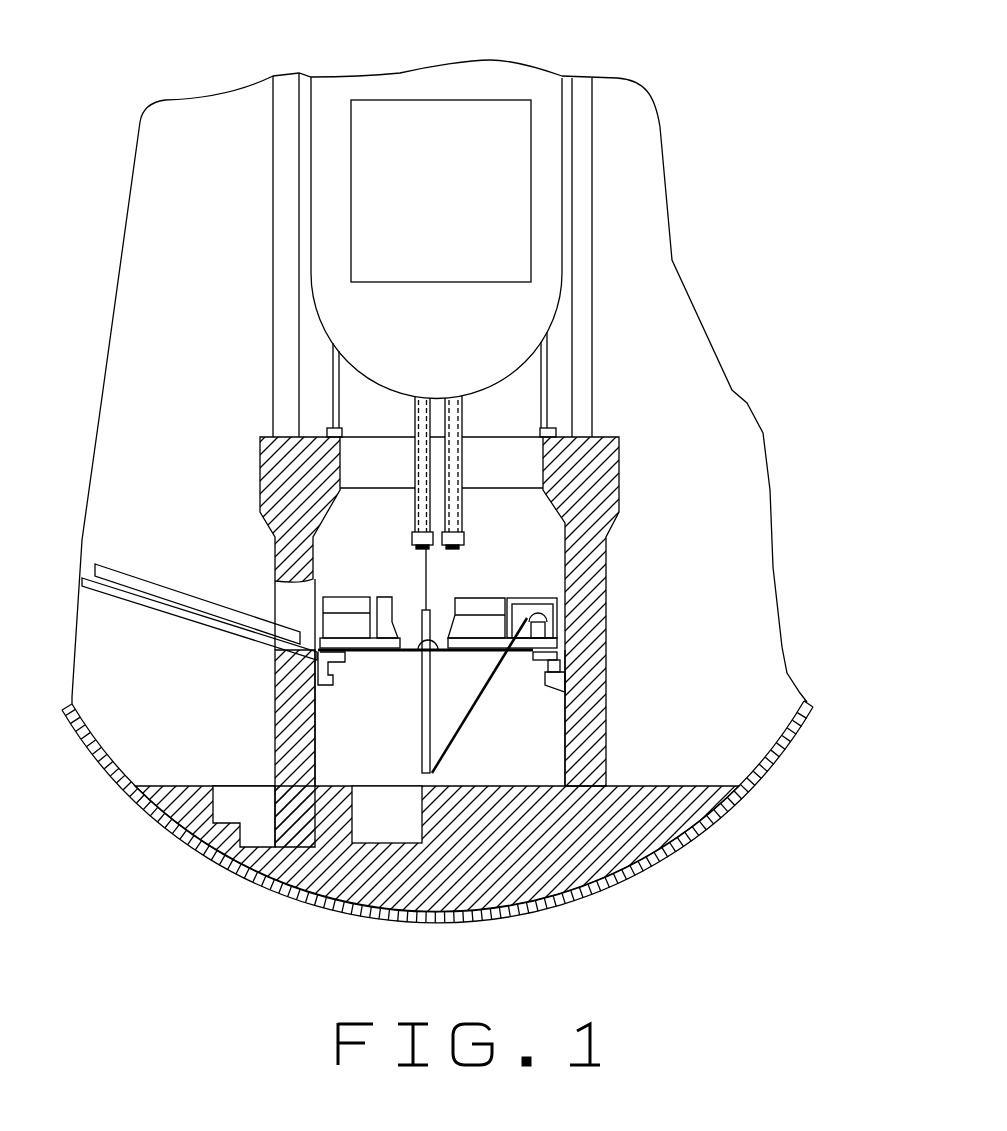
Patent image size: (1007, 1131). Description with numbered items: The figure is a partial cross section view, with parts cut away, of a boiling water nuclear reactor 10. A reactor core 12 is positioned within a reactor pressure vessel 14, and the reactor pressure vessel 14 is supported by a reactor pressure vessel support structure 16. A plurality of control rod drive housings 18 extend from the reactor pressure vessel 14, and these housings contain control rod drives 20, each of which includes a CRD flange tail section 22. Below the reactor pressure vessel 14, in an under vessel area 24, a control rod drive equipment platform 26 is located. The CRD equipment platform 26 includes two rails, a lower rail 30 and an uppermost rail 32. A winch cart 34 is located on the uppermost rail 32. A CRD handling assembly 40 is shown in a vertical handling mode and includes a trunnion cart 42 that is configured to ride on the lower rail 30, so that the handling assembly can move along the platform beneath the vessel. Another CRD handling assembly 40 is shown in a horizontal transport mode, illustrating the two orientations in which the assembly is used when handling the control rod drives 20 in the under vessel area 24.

The boiling water nuclear reactor 10 is at (700, 210).
The reactor core 12 is at (442, 249).
The reactor pressure vessel 14 is at (562, 175).
The reactor pressure vessel support structure 16 is at (619, 477).
The control rod drive housings 18 is at (450, 470).
The control rod drives 20 is at (462, 514).
The CRD flange tail section 22 is at (465, 548).
The under vessel area 24 is at (372, 545).
The control rod drive equipment platform 26 is at (519, 662).
The lower rail 30 is at (442, 653).
The uppermost rail 32 is at (478, 637).
The winch cart 34 is at (548, 618).
The CRD handling assembly 40 is at (210, 582).
The trunnion cart 42 is at (420, 652).